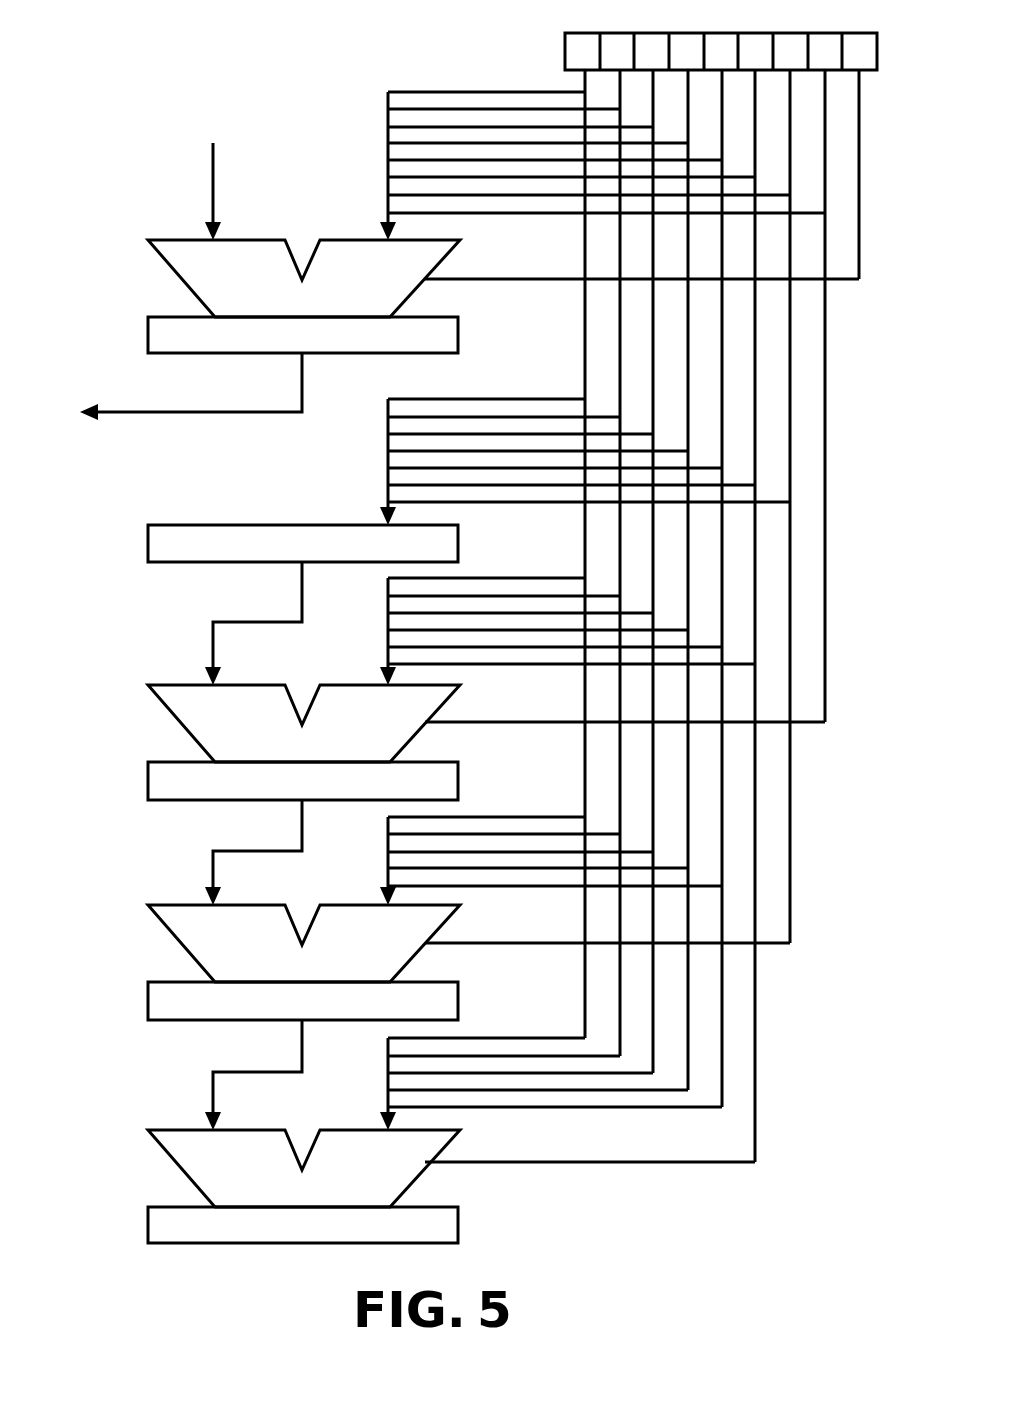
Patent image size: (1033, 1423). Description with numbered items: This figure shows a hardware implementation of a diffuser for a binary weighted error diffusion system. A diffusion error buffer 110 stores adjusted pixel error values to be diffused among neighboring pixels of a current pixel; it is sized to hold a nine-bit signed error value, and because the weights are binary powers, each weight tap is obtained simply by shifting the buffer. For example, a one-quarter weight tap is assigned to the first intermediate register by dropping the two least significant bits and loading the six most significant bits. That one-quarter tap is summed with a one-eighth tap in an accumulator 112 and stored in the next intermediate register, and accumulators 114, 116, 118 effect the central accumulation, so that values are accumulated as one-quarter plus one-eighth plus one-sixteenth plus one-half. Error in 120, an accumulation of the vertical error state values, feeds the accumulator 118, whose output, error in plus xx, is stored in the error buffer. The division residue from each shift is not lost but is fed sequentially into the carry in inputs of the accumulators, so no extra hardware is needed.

The diffusion error buffer 110 is at (565, 48).
The accumulator 112 is at (165, 683).
The accumulator 114 is at (165, 903).
The accumulator 116 is at (170, 1128).
The accumulator 118 is at (165, 237).
The error in 120 is at (155, 125).